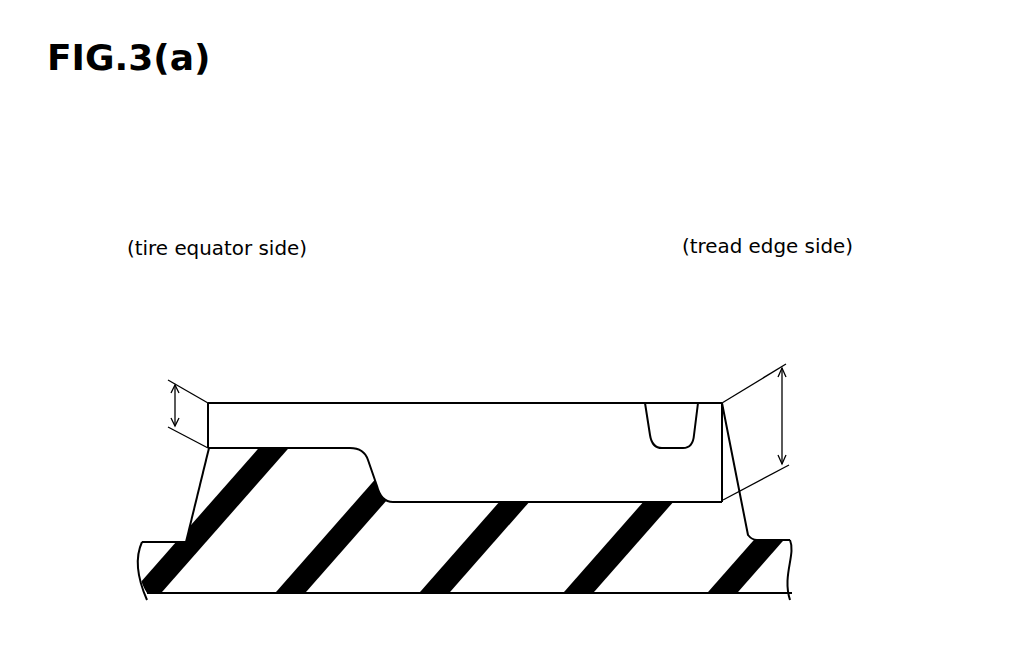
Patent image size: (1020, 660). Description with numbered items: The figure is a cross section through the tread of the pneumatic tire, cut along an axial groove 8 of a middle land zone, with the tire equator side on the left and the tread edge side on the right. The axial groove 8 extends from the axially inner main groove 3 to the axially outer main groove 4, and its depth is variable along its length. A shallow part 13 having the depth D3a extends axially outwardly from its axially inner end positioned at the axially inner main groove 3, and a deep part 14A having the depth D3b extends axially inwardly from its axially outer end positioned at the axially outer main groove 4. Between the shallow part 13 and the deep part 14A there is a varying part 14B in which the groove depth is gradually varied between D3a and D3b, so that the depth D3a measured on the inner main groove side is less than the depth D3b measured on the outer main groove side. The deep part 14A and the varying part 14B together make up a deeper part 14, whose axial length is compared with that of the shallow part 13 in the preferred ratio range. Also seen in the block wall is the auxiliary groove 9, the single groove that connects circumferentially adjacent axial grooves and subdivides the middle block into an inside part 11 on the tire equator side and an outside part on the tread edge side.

The axially inner main groove 3 is at (175, 484).
The axially outer main groove 4 is at (762, 508).
The axial groove 8 is at (448, 285).
The auxiliary groove 9 is at (663, 433).
The inside part 11 is at (235, 403).
The shallow part 13 is at (332, 448).
The deeper part 14 is at (370, 327).
The deep part 14A is at (465, 502).
The varying part 14B is at (373, 480).
The depth measured in main groove 3 side D3a is at (161, 414).
The depth measured in main groove 4 side D3b is at (764, 432).